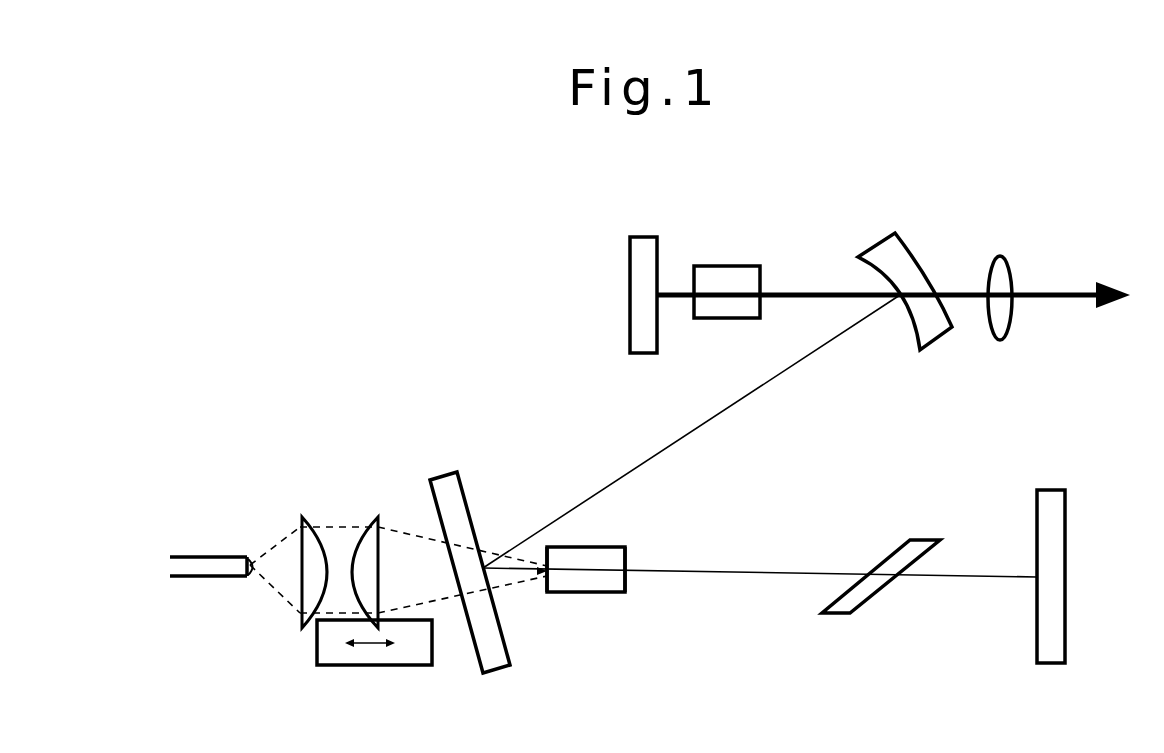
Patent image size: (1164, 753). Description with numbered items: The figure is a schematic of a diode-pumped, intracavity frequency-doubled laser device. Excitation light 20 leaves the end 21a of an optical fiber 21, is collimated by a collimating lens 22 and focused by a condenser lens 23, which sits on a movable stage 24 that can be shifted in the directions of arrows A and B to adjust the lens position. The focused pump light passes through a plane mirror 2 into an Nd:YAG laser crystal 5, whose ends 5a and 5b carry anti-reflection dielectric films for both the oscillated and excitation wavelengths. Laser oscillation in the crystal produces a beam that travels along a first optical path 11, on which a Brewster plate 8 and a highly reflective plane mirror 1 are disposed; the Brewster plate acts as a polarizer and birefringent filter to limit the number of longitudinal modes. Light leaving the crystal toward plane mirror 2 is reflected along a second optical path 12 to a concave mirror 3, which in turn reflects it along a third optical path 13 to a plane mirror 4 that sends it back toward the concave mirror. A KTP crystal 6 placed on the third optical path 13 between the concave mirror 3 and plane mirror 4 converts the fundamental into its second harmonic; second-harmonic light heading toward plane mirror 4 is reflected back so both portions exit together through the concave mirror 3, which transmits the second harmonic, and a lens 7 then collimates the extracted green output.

The plane mirror 1 is at (1058, 493).
The plane mirror 2 is at (453, 490).
The concave mirror 3 is at (897, 238).
The plane mirror 4 is at (642, 238).
The Nd:YAG laser crystal 5 is at (605, 547).
The end of the Nd:YAG laser crystal 5a is at (628, 556).
The end of the Nd:YAG laser crystal 5b is at (545, 556).
The KTP crystal 6 is at (735, 266).
The lens 7 is at (1003, 258).
The Brewster plate 8 is at (912, 540).
The first optical path 11 is at (968, 576).
The second optical path 12 is at (735, 403).
The third optical path 13 is at (805, 293).
The excitation light 20 is at (282, 538).
The optical fiber 21 is at (200, 556).
The end of the optical fiber 21a is at (252, 558).
The collimating lens 22 is at (305, 517).
The condenser lens 23 is at (375, 517).
The movable stage 24 is at (317, 640).